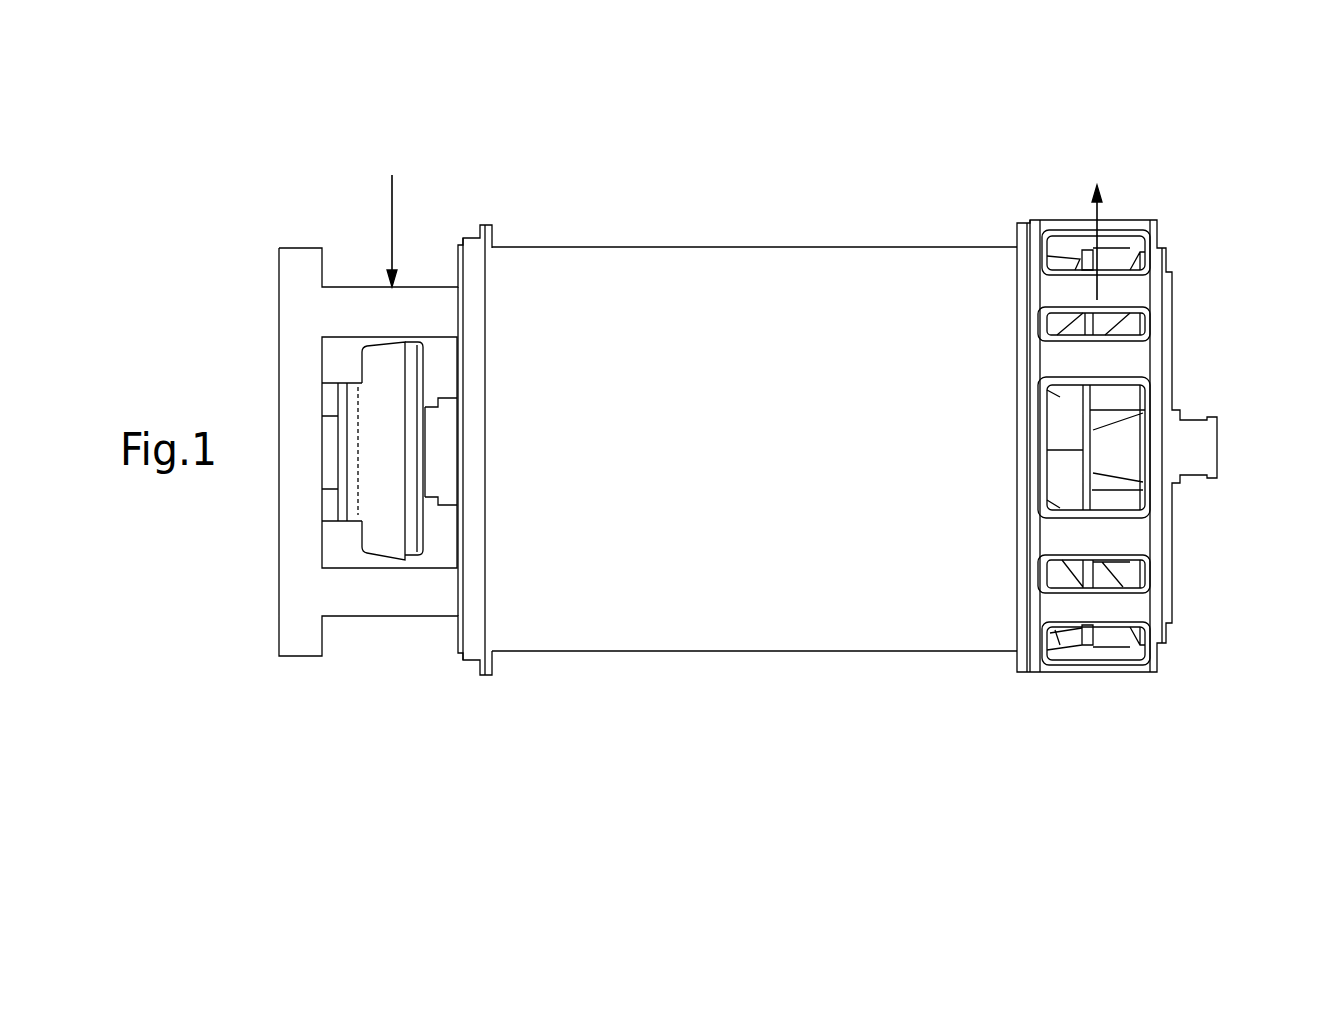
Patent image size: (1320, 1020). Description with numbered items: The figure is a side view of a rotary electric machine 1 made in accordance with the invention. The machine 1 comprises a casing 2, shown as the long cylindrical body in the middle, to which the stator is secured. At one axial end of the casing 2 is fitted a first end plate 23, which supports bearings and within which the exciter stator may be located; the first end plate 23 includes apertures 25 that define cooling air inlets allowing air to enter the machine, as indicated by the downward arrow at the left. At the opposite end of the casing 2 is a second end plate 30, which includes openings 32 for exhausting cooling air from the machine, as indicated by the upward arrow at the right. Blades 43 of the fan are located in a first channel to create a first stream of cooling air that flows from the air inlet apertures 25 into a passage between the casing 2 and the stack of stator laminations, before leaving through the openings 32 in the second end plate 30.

The rotary electric machine 1 is at (345, 163).
The casing 2 is at (760, 305).
The first end plate 23 is at (375, 599).
The apertures 25 is at (443, 551).
The second end plate 30 is at (1165, 650).
The openings 32 is at (1128, 573).
The blades 43 is at (1062, 630).